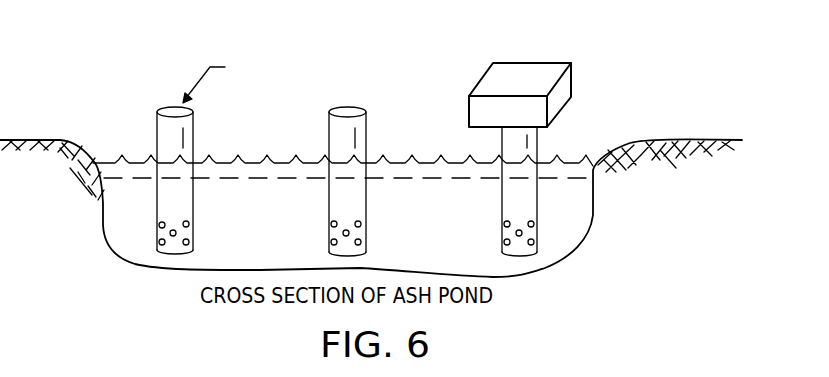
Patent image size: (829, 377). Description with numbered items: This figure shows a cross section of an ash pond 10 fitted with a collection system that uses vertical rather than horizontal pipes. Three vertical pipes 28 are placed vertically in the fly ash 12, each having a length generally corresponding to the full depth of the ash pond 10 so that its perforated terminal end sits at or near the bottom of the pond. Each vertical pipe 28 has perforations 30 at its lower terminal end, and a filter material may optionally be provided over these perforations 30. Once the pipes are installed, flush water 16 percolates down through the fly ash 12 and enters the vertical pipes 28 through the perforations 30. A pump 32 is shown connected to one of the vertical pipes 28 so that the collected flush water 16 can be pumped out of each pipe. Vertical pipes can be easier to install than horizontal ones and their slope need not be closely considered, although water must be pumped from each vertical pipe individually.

The ash pond 10 is at (371, 165).
The fly ash 12 is at (160, 258).
The flush water 16 is at (250, 170).
The vertical pipes 28 is at (157, 128).
The perforations 30 is at (193, 240).
The pump 32 is at (545, 68).